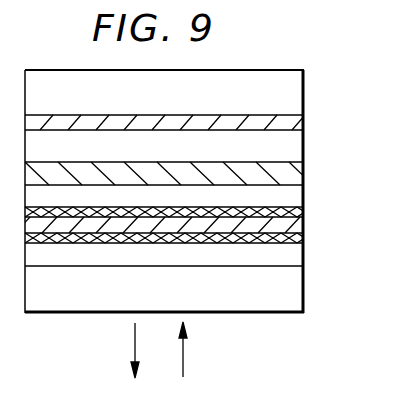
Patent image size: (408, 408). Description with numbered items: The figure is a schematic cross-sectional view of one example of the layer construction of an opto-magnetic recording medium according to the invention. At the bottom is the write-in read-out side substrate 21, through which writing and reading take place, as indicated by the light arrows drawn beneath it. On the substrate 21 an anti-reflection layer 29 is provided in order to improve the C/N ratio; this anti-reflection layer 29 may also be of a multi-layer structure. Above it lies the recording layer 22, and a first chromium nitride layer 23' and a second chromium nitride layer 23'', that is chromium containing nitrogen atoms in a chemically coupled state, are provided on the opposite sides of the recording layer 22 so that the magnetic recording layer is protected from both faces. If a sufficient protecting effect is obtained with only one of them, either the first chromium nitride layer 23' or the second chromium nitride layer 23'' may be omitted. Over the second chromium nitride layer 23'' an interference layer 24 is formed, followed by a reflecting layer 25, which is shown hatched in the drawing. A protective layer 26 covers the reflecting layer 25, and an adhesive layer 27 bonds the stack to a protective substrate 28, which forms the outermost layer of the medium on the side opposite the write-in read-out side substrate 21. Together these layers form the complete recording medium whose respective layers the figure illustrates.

The write-in read-out side substrate 21 is at (293, 290).
The recording layer 22 is at (296, 228).
The layer of chromium nitride 23' is at (193, 252).
The layer of chromium nitride 23'' is at (194, 219).
The interference layer 24 is at (293, 197).
The reflecting layer 25 is at (294, 174).
The protective layer 26 is at (294, 151).
The adhesive layer 27 is at (296, 127).
The protective substrate 28 is at (296, 95).
The anti-reflection layer 29 is at (292, 257).